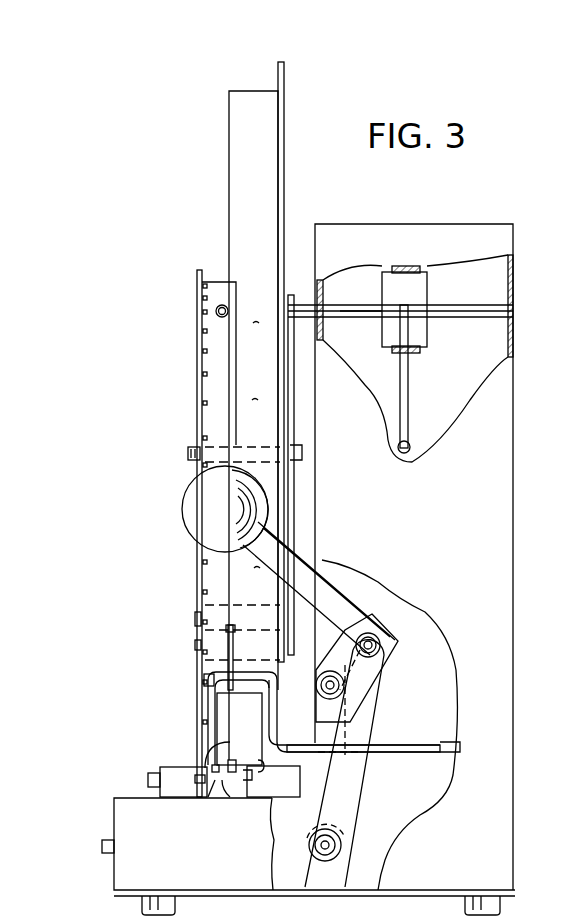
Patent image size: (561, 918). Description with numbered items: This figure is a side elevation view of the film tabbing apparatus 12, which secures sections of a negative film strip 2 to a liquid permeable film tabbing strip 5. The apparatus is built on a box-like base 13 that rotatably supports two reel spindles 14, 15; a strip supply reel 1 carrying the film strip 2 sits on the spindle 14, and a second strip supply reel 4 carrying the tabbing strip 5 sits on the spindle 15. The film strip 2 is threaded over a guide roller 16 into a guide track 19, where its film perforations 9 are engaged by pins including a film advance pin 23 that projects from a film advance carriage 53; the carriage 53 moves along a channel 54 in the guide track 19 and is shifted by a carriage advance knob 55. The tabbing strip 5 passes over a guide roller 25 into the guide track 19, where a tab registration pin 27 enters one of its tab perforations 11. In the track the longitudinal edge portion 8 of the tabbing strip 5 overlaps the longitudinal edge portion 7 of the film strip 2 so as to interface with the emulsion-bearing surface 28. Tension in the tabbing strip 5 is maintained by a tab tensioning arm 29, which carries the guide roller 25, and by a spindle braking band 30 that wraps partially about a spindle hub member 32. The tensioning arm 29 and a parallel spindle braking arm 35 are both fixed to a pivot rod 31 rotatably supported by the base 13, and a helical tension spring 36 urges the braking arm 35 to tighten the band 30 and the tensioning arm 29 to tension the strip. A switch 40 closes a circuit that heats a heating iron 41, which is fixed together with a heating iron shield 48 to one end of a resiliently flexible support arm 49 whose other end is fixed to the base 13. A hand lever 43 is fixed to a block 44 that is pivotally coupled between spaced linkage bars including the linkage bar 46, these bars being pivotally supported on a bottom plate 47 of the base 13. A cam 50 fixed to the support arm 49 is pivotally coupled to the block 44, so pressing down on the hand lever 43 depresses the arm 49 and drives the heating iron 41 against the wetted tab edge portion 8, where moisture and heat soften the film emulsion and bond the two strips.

The strip supply reel 1 is at (200, 360).
The negative film strip 2 is at (210, 386).
The strip supply reel 4 is at (278, 76).
The film tabbing strip 5 is at (238, 190).
The longitudinal edge portion 7 is at (245, 773).
The longitudinal edge portion 8 is at (228, 765).
The film perforations 9 is at (203, 328).
The tab perforations 11 is at (252, 130).
The film tabbing apparatus 12 is at (126, 447).
The box-like base 13 is at (396, 224).
The reel spindle 14 is at (188, 458).
The reel spindle 15 is at (337, 305).
The guide roller 16 is at (200, 611).
The guide track 19 is at (170, 776).
The film advance pin 23 is at (213, 768).
The guide roller 25 is at (230, 640).
The tab registration pin 27 is at (272, 768).
The emulsion-bearing surface 28 is at (205, 770).
The tab tensioning arm 29 is at (296, 405).
The spindle braking band 30 is at (395, 268).
The pivot rod 31 is at (371, 311).
The spindle hub member 32 is at (427, 290).
The spindle braking arm 35 is at (408, 410).
The helical tension spring 36 is at (410, 447).
The switch 40 is at (102, 846).
The heating iron 41 is at (225, 712).
The hand lever 43 is at (305, 564).
The block 44 is at (378, 631).
The linkage bar 46 is at (380, 695).
The bottom plate 47 is at (355, 887).
The heating iron shield 48 is at (208, 678).
The support arm 49 is at (308, 745).
The cam 50 is at (335, 718).
The film advance carriage 53 is at (195, 781).
The channel 54 is at (215, 780).
The carriage advance knob 55 is at (148, 780).